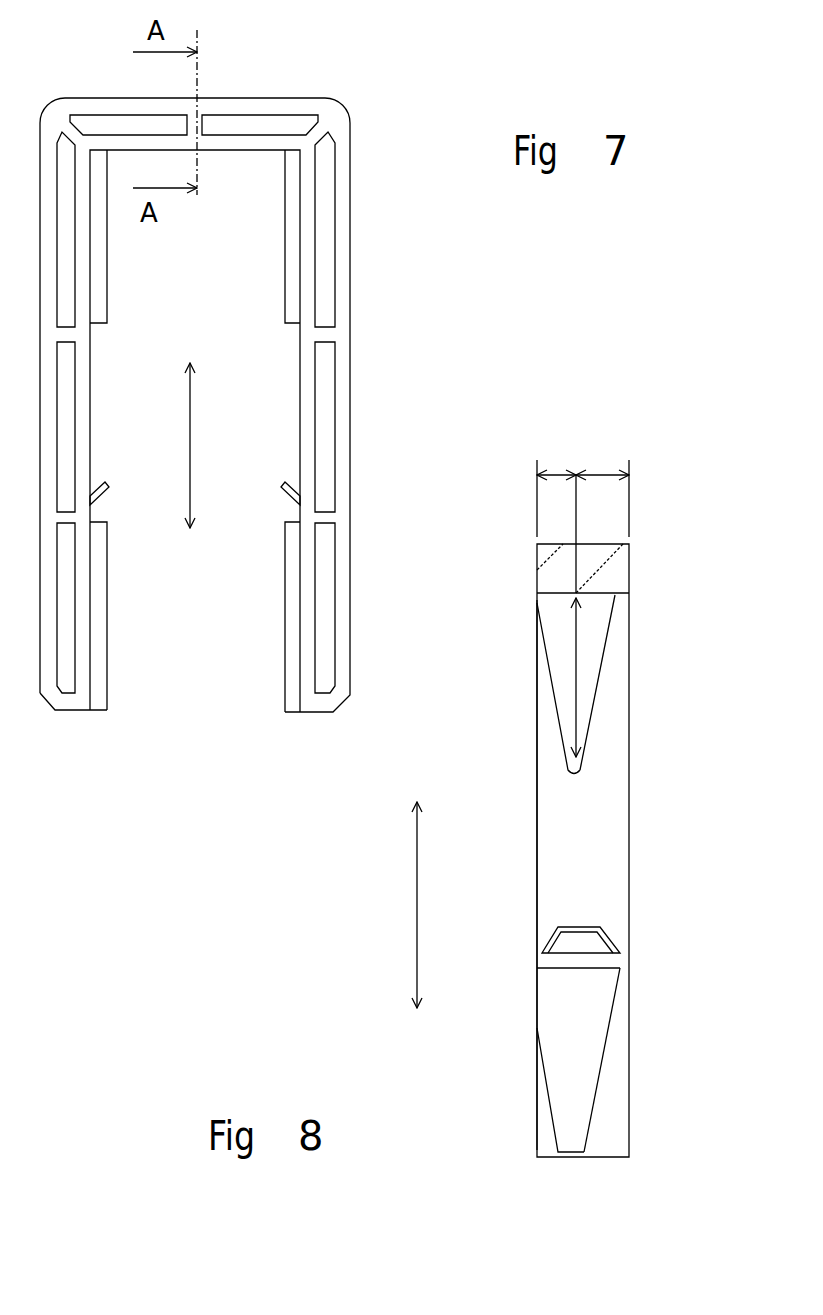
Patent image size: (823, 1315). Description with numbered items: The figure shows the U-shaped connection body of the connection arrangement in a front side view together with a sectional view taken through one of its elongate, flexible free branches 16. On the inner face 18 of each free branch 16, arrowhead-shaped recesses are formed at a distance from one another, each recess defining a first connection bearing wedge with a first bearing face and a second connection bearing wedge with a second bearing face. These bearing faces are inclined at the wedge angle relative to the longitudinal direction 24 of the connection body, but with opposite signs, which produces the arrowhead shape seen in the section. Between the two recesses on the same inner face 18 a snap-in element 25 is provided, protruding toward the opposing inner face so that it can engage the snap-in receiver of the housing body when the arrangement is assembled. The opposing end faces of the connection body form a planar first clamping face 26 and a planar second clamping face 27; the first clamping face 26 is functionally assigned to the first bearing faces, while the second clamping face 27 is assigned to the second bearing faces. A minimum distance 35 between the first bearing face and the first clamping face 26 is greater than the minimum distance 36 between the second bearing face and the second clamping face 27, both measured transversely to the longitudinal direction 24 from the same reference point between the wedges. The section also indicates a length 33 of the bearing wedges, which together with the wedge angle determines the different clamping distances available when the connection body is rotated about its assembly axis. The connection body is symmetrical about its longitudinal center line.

In FIG. 8, the free branch 16 is at (635, 847).
In FIG. 8, the inner face 18 is at (553, 868).
In FIG. 8, the longitudinal direction 24 is at (417, 908).
In FIG. 7, the snap-in element 25 is at (108, 488).
In FIG. 8, the snap-in element 25 is at (590, 928).
In FIG. 7, the first clamping face 26 is at (350, 332).
In FIG. 8, the first clamping face 26 is at (637, 573).
In FIG. 8, the second clamping face 27 is at (528, 565).
In FIG. 8, the length of the bearing wedges 33 is at (576, 640).
In FIG. 8, the minimum distance 35 is at (603, 470).
In FIG. 8, the minimum distance 36 is at (560, 470).